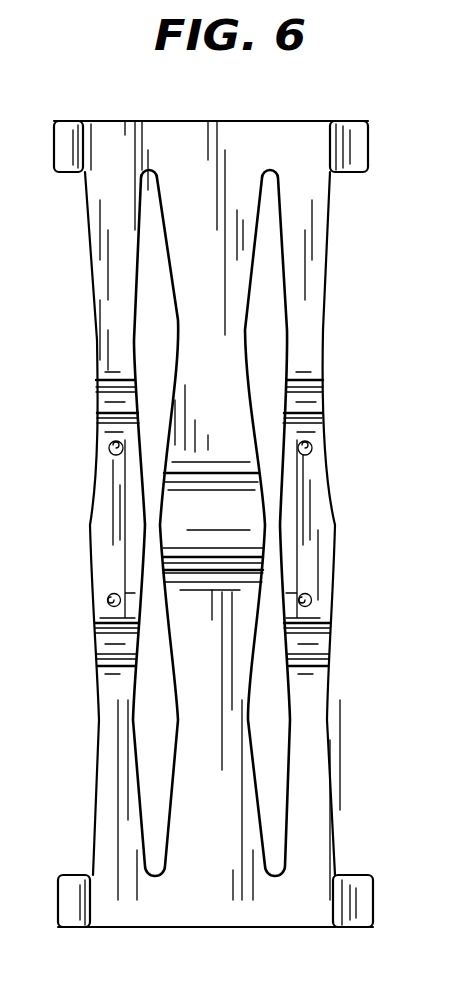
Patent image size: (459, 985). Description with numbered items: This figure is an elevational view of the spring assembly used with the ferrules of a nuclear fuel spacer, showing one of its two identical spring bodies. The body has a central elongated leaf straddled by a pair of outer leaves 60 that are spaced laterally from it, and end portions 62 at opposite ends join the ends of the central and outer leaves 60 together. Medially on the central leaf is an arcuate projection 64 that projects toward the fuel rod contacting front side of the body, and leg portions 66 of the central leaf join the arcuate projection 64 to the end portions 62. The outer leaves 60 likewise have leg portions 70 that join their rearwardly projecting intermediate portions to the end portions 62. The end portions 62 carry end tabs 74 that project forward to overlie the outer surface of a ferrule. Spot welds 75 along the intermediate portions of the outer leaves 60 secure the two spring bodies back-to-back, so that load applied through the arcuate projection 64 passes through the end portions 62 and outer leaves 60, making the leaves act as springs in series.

The outer leaves 60 is at (113, 331).
The end portions 62 is at (192, 902).
The arcuate projection 64 is at (190, 528).
The leg portions 66 is at (233, 263).
The leg portions 70 is at (110, 274).
The end tabs 74 is at (364, 910).
The spot welds 75 is at (110, 447).